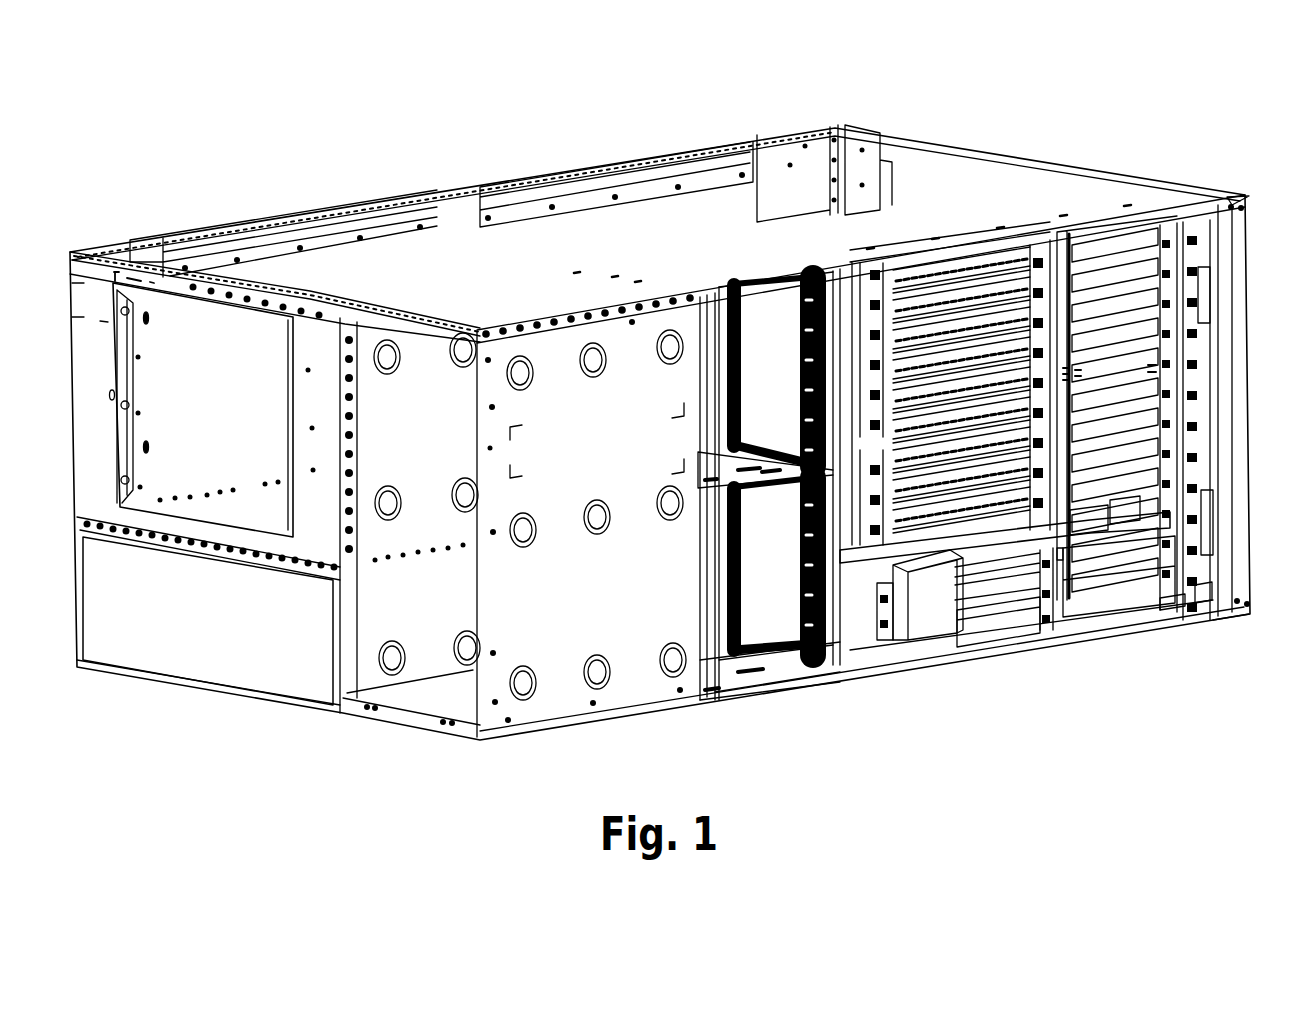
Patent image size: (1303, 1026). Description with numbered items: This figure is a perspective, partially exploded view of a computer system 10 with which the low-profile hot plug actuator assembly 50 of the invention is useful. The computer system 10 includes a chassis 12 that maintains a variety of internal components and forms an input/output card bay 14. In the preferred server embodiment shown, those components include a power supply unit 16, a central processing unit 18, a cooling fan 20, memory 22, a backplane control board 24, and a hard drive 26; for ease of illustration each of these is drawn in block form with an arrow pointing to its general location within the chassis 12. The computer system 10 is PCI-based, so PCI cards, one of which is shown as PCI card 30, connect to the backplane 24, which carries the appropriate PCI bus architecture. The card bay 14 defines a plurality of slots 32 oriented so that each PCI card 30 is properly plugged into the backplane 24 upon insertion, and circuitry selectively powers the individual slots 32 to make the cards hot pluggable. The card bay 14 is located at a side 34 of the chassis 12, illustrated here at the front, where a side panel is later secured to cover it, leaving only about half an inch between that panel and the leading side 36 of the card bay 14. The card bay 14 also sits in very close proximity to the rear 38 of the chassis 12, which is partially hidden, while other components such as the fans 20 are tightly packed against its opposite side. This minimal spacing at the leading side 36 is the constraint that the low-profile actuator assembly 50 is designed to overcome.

The computer system 10 is at (1181, 86).
The chassis 12 is at (543, 738).
The input/output card bay 14 is at (1102, 262).
The power supply unit 16 is at (173, 640).
The central processing unit 18 is at (240, 215).
The cooling fan 20 is at (797, 705).
The memory 22 is at (712, 135).
The backplane control board 24 is at (950, 268).
The hard drive 26 is at (410, 683).
The PCI card 30 is at (1018, 543).
The slots 32 is at (1160, 362).
The side of the chassis 34 is at (1173, 605).
The leading side of the card bay 36 is at (1200, 592).
The rear of the chassis 38 is at (1250, 410).
The low-profile hot plug actuator assembly 50 is at (1208, 460).